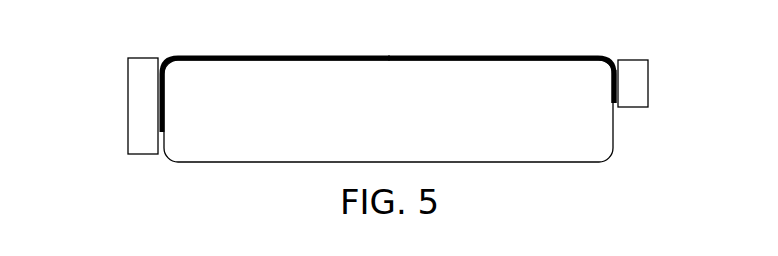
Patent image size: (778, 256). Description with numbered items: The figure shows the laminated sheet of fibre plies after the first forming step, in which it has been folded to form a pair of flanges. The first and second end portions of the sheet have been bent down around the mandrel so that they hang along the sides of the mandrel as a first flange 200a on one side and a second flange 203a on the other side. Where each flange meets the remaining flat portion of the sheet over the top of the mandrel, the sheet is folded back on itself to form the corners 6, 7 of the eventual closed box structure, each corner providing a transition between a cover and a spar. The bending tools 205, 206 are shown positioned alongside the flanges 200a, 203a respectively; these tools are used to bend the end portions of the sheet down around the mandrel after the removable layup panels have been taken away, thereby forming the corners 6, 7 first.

The corner 6 is at (170, 57).
The corner 7 is at (612, 62).
The first flange 200a is at (164, 115).
The second flange 203a is at (614, 90).
The bending tool 205 is at (128, 100).
The bending tool 206 is at (648, 85).